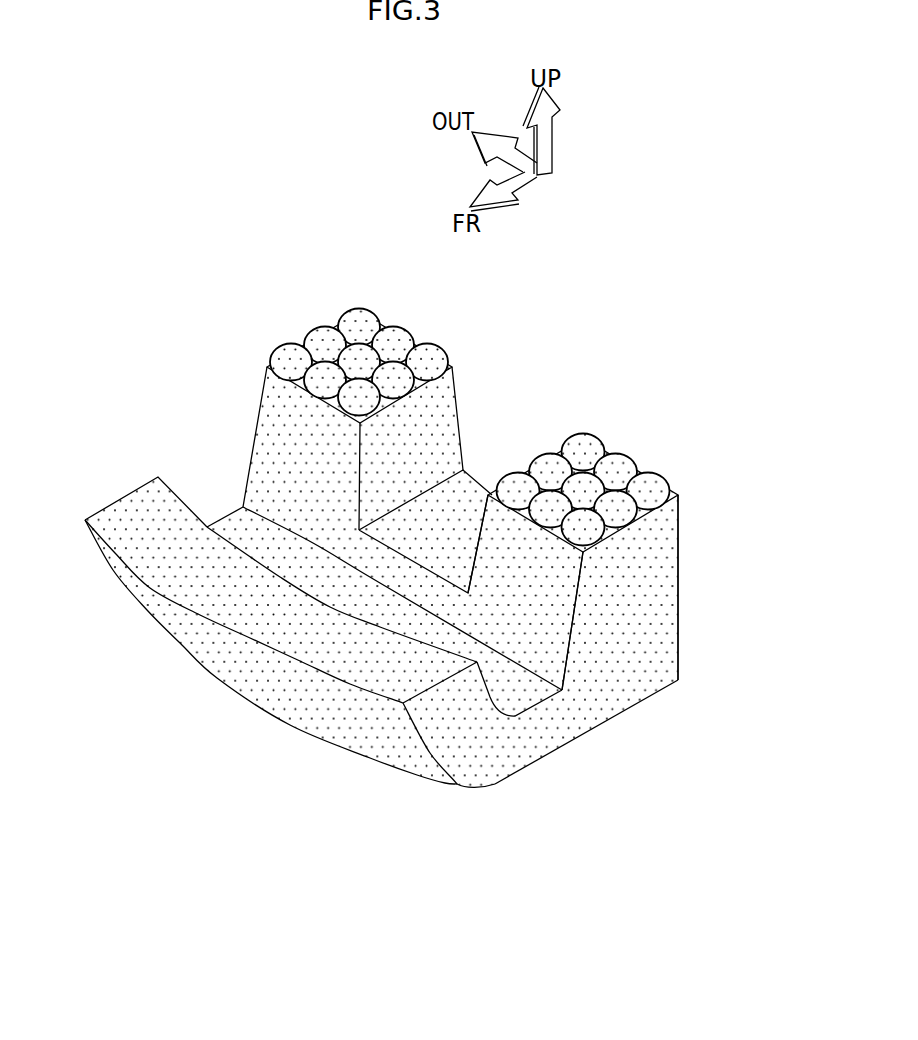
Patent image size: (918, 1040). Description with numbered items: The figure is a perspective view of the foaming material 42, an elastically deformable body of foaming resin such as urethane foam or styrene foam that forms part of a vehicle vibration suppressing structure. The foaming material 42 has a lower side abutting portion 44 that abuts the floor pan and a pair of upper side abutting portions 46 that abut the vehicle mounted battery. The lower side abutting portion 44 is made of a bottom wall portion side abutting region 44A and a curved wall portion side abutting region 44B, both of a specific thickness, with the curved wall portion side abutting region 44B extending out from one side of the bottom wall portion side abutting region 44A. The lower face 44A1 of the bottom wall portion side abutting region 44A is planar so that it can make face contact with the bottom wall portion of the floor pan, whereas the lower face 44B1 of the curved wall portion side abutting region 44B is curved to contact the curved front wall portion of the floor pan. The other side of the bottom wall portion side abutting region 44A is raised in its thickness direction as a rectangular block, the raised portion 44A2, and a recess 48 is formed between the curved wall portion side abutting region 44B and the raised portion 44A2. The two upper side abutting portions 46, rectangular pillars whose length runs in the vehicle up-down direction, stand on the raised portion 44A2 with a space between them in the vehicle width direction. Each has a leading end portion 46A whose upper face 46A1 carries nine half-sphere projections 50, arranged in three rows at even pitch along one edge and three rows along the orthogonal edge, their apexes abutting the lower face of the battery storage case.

The foaming material 42 is at (616, 336).
The lower side abutting portion 44 is at (479, 822).
The bottom wall portion side abutting region 44A is at (611, 729).
The lower face 44A1 is at (657, 697).
The raised portion 44A2 is at (463, 500).
The curved wall portion side abutting region 44B is at (123, 486).
The lower face 44B1 is at (275, 705).
The upper side abutting portion 46 is at (462, 394).
The leading end portion 46A is at (462, 427).
The upper face 46A1 is at (268, 367).
The recess 48 is at (237, 527).
The projections 50 is at (360, 356).